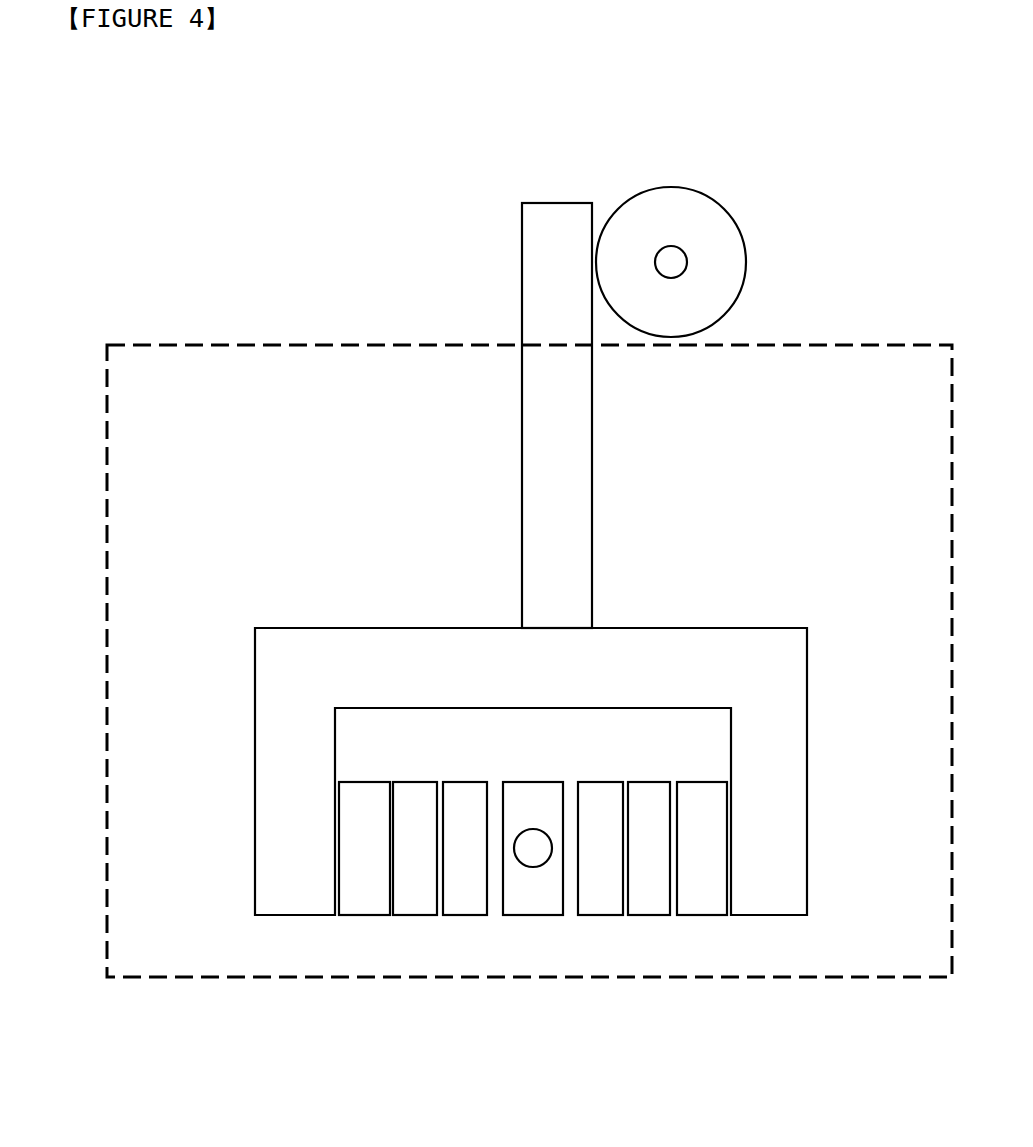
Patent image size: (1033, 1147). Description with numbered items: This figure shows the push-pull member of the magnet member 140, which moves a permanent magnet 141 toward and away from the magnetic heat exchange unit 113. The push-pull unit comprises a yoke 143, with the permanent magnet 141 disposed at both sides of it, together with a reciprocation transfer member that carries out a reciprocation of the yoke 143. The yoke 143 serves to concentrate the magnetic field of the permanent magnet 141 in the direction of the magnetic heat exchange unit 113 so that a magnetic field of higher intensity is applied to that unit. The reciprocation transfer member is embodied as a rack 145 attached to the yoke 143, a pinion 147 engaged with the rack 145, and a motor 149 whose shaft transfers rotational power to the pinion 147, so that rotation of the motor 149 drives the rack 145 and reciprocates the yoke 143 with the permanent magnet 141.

The magnet member 140 is at (300, 345).
The rack 145 is at (552, 208).
The pinion 147 is at (730, 255).
The motor 149 is at (670, 260).
The yoke 143 is at (390, 635).
The magnetic heat exchange unit 113 is at (535, 802).
The permanent magnet 141 is at (595, 897).